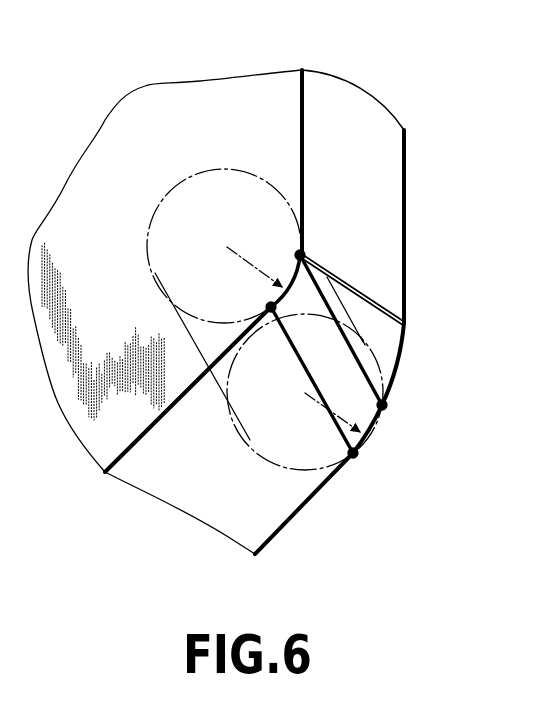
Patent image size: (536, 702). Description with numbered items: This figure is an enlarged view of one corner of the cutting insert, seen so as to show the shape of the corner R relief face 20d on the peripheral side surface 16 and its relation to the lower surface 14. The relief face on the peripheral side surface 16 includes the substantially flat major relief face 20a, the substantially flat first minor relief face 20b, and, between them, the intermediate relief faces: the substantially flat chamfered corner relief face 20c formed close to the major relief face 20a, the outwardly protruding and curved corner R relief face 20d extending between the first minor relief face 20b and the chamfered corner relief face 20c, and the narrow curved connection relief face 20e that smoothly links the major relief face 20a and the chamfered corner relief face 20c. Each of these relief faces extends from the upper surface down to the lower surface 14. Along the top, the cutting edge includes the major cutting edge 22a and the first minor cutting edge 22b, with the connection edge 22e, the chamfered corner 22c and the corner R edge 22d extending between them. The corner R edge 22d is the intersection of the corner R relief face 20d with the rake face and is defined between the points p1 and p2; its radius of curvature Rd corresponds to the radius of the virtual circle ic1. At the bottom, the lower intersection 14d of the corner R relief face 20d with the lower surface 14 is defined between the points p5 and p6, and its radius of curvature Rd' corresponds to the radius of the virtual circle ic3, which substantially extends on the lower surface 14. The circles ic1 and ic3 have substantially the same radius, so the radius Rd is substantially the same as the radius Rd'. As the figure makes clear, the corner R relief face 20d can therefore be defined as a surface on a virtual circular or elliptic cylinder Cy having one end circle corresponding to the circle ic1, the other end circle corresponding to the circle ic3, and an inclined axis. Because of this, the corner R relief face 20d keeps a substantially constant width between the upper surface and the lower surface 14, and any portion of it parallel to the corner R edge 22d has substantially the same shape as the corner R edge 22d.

The lower surface 14 is at (233, 97).
The peripheral side surface 16 is at (348, 100).
The major relief face 20a is at (375, 178).
The major cutting edge 22a is at (405, 206).
The lower intersection 14d is at (290, 283).
The virtual circle ic3 is at (222, 172).
The radius of curvature of the lower intersection Rd' is at (251, 238).
The virtual circular cylinder Cy is at (180, 320).
The point p5 is at (303, 253).
The point p6 is at (268, 306).
The corner R relief face 20d is at (315, 303).
The connection relief face 20e is at (378, 297).
The connection edge 22e is at (405, 323).
The chamfered corner relief face 20c is at (389, 343).
The chamfered corner 22c is at (395, 374).
The point p1 is at (385, 407).
The corner R edge 22d is at (372, 432).
The point p2 is at (356, 458).
The first minor cutting edge 22b is at (311, 505).
The first minor relief face 20b is at (268, 515).
The virtual circle ic1 is at (246, 450).
The radius of curvature of the corner R edge Rd is at (312, 417).